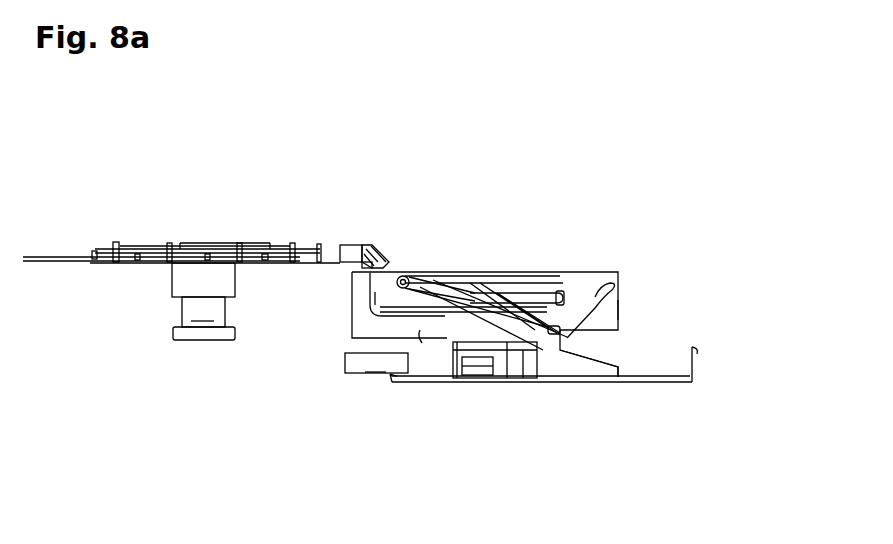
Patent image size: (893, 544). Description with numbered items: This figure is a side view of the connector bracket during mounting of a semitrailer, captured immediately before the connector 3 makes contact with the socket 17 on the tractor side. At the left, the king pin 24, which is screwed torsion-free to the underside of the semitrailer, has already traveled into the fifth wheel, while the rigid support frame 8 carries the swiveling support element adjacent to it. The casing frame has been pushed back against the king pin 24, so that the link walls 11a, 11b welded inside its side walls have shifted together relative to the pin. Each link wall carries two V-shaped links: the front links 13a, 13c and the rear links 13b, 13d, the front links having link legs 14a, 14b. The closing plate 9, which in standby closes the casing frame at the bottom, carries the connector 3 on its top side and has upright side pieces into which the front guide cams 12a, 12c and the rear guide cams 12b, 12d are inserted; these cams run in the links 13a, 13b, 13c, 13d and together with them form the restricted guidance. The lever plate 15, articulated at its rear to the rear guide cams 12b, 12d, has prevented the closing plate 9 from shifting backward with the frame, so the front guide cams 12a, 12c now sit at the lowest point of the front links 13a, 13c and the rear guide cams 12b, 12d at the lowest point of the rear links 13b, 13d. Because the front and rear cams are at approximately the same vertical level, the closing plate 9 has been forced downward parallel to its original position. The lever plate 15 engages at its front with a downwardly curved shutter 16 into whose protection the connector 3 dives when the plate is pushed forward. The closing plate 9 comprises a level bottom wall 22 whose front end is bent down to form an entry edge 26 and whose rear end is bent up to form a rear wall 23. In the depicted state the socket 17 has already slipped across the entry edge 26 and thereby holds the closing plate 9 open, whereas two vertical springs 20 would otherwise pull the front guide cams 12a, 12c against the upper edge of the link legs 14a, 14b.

The connector 3 is at (458, 378).
The support frame 8 is at (383, 262).
The closing plate 9 is at (582, 378).
The link wall 11a is at (298, 381).
The link wall 11b is at (368, 300).
The front guide cam 12a is at (482, 270).
The rear guide cam 12b is at (558, 271).
The front guide cam 12c is at (420, 300).
The rear guide cam 12d is at (568, 293).
The front link 13a is at (457, 351).
The rear link 13b is at (677, 282).
The front link 13c is at (352, 338).
The rear link 13d is at (618, 310).
The front link leg 14a is at (192, 340).
The front link leg 14b is at (360, 272).
The lever plate 15 is at (515, 378).
The shutter 16 is at (423, 317).
The socket 17 is at (376, 363).
The vertical spring 20 is at (463, 293).
The bottom wall 22 is at (617, 380).
The rear wall 23 is at (697, 350).
The king pin 24 is at (203, 301).
The entry edge 26 is at (392, 378).